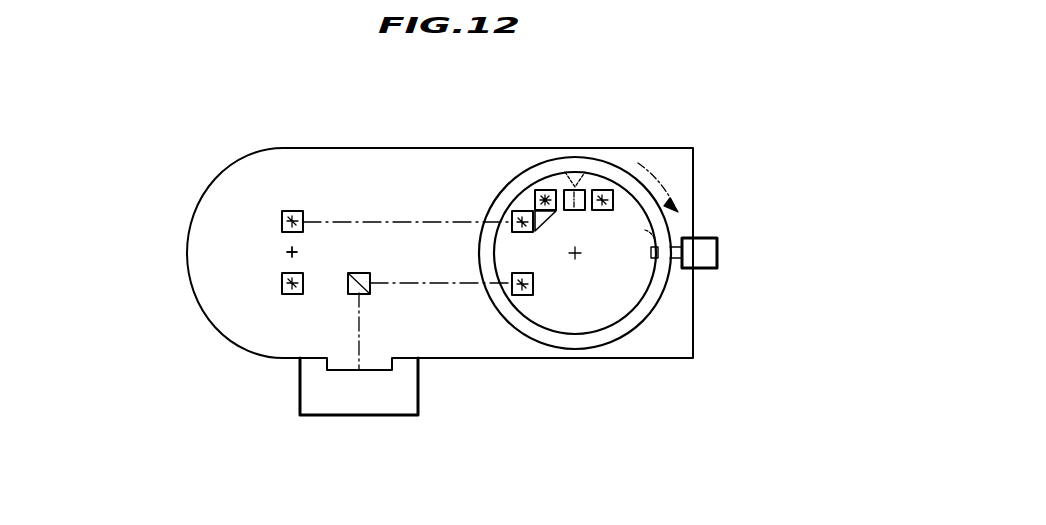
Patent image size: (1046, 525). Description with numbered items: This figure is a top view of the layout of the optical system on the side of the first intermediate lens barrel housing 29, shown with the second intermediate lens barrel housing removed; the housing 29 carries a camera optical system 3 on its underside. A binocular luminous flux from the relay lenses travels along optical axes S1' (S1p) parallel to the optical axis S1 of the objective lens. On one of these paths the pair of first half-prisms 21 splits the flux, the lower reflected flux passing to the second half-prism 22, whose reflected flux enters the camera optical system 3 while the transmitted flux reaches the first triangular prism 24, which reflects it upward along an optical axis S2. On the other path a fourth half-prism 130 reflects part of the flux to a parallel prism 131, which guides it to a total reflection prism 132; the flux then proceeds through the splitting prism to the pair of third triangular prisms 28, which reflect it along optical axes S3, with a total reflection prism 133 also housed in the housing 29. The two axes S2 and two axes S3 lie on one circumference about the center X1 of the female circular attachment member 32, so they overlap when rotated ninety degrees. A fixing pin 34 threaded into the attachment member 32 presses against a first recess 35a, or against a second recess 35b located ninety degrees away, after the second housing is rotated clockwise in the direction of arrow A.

The first intermediate lens barrel housing 29 is at (693, 168).
The camera optical system 3 is at (300, 405).
The fourth half-prism 130 is at (282, 216).
The first half-prisms 21 is at (283, 292).
The optical axis of the binocular luminous flux S1p is at (282, 228).
The optical axis of the objective lens S1 is at (294, 252).
The second half-prism 22 is at (348, 292).
The female circular attachment member 32 is at (658, 290).
The total reflection prism 132 is at (580, 211).
The center X1 is at (575, 257).
The total reflection prism 133 is at (512, 212).
The first triangular prism 24 is at (524, 295).
The optical axis S2 is at (517, 232).
The third triangular prisms 28 is at (547, 190).
The optical axis S3 is at (535, 190).
The parallel prism 131 is at (545, 218).
The second recess 35b is at (589, 173).
The first recess 35a is at (645, 253).
The fixing pin 34 is at (717, 254).
The arrow A is at (658, 184).